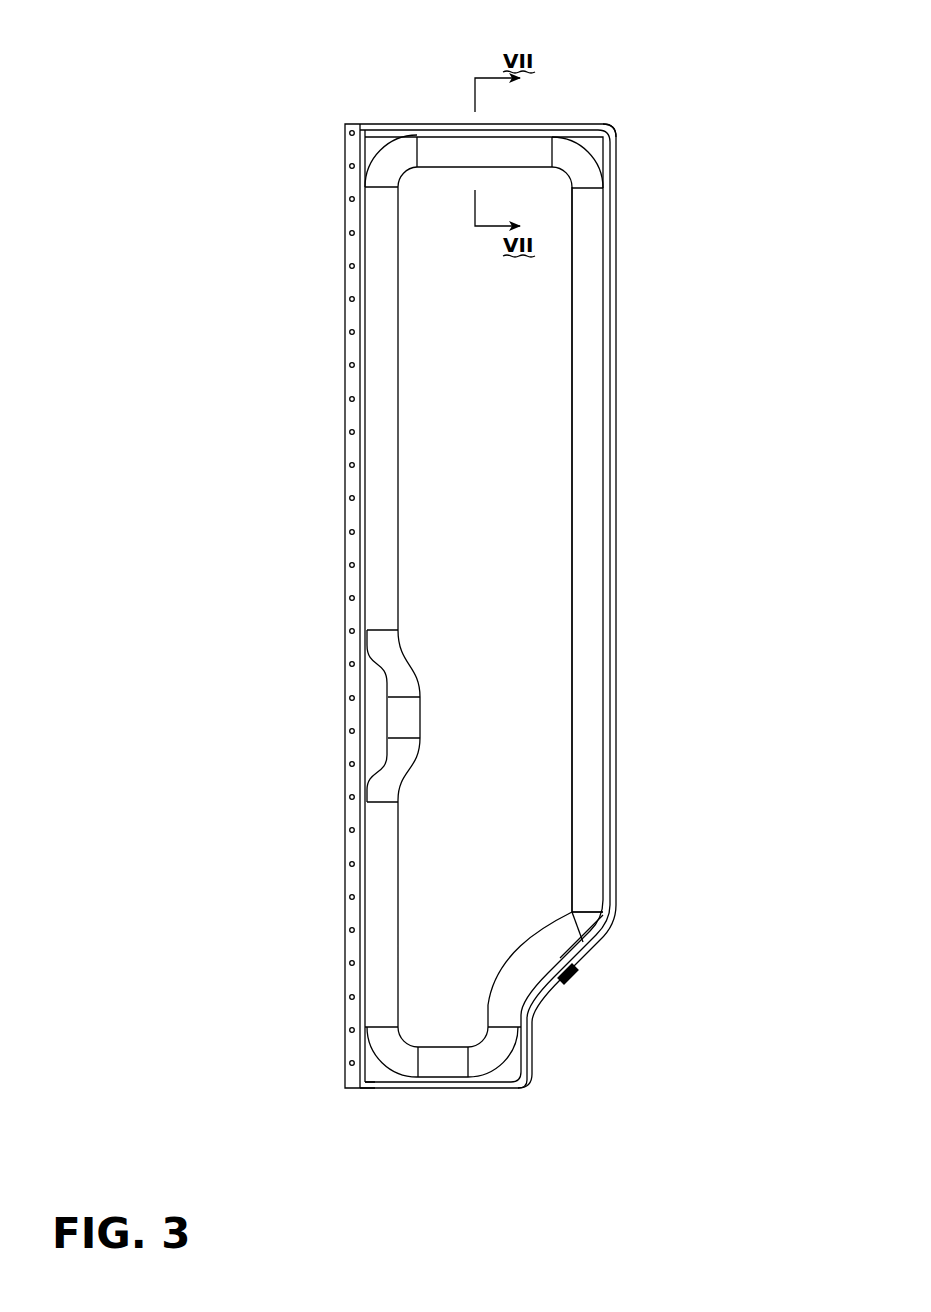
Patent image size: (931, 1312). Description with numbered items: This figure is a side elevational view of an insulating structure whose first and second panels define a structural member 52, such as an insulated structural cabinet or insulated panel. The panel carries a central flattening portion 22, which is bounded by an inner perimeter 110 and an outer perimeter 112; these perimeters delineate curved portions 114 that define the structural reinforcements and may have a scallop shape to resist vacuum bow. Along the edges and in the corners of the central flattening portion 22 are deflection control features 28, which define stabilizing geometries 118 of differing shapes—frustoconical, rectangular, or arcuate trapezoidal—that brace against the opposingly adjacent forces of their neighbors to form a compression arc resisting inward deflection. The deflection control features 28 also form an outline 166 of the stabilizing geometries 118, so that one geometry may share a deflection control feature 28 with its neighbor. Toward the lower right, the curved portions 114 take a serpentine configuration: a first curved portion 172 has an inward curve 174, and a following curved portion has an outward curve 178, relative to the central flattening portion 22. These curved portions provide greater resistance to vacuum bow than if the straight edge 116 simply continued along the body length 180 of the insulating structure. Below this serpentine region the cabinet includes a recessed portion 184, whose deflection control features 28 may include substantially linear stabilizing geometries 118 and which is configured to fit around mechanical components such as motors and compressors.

The structural member 52 is at (320, 55).
The central flattening portion 22 is at (483, 503).
The deflection control features 28 is at (418, 152).
The inner perimeter 110 is at (572, 290).
The outer perimeter 112 is at (612, 327).
The curved portion 114 is at (606, 159).
The straight edge 116 is at (587, 388).
The stabilizing geometries 118 is at (578, 155).
The outline 166 is at (378, 1066).
The first curved portion 172 is at (568, 915).
The inward curve 174 is at (581, 922).
The outward curve 178 is at (533, 997).
The body length 180 is at (343, 1088).
The recessed portion 184 is at (591, 998).